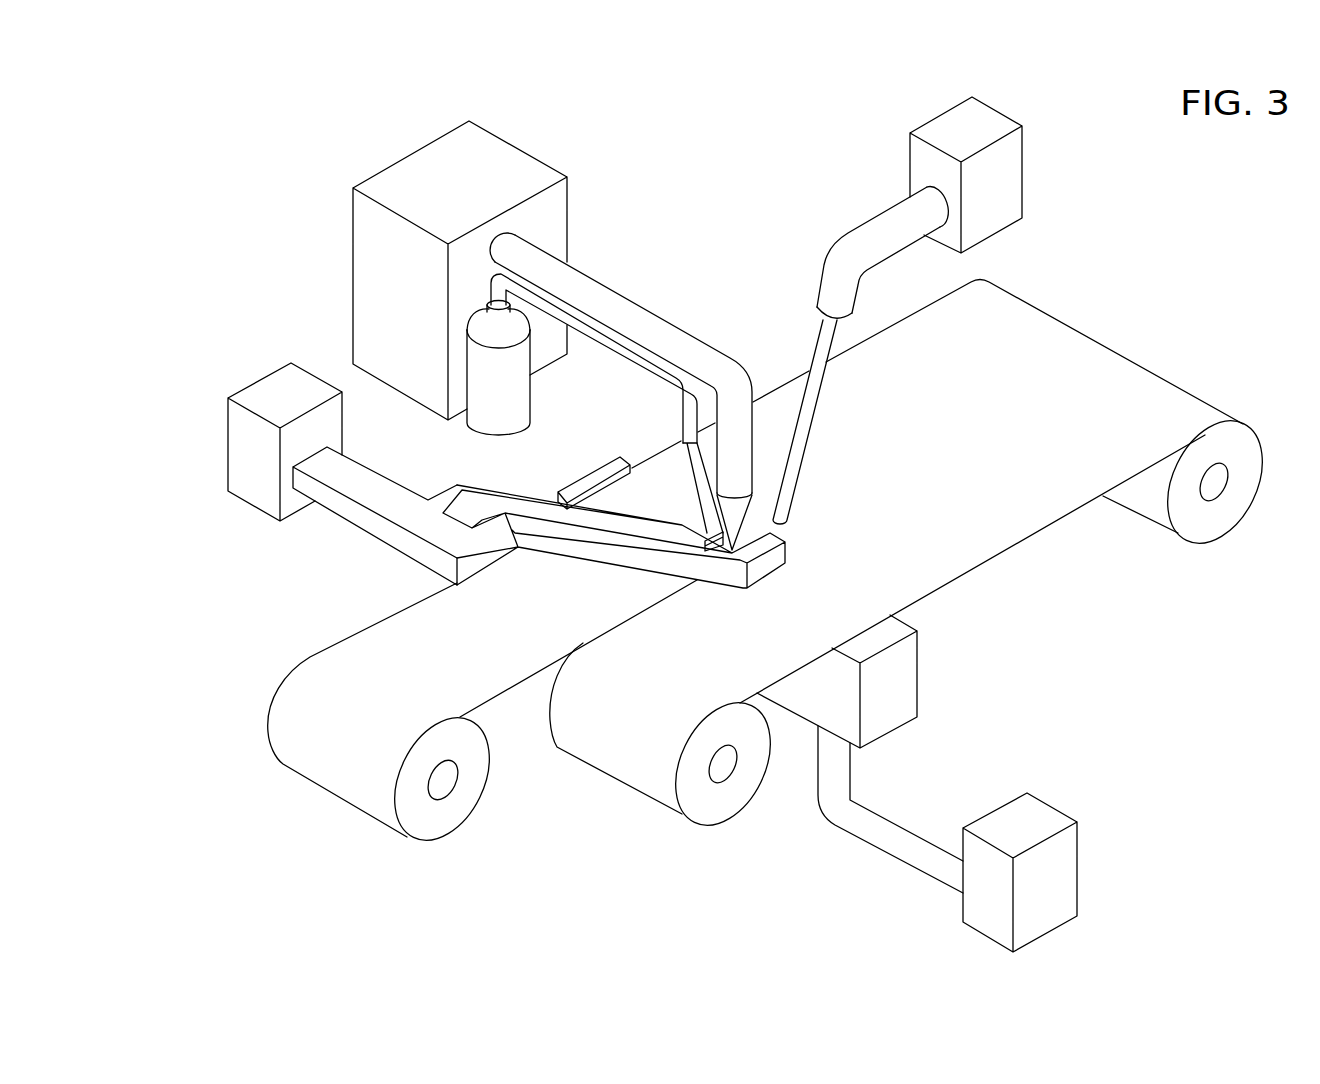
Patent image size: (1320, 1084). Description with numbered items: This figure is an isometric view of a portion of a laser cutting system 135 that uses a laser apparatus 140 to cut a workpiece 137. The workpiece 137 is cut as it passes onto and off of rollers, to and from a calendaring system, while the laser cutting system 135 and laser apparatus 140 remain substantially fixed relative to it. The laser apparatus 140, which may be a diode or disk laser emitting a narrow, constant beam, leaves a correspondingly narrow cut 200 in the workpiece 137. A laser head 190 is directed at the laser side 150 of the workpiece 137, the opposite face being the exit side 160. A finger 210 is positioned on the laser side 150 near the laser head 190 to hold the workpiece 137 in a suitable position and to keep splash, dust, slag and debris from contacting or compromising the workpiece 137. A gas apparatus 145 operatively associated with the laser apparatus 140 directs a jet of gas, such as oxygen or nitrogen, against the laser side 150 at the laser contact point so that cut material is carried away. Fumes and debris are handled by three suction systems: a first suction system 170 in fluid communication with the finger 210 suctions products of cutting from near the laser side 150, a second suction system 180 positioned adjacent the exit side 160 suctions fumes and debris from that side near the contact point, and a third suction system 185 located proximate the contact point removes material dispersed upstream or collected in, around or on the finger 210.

The laser cutting system 135 is at (750, 171).
The workpiece 137 is at (1028, 523).
The laser apparatus 140 is at (585, 120).
The gas apparatus 145 is at (661, 470).
The laser side 150 is at (849, 421).
The exit side 160 is at (962, 620).
The first suction system 170 is at (198, 440).
The second suction system 180 is at (1128, 837).
The third suction system 185 is at (1066, 154).
The laser head 190 is at (755, 495).
The cut 200 is at (647, 612).
The finger 210 is at (583, 553).